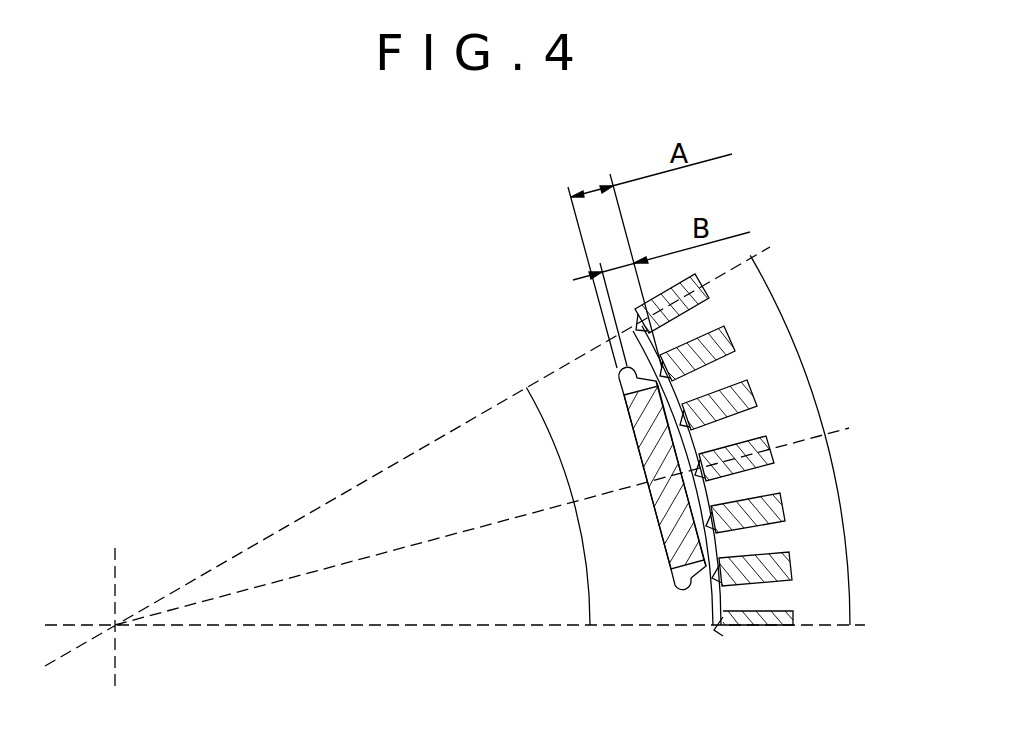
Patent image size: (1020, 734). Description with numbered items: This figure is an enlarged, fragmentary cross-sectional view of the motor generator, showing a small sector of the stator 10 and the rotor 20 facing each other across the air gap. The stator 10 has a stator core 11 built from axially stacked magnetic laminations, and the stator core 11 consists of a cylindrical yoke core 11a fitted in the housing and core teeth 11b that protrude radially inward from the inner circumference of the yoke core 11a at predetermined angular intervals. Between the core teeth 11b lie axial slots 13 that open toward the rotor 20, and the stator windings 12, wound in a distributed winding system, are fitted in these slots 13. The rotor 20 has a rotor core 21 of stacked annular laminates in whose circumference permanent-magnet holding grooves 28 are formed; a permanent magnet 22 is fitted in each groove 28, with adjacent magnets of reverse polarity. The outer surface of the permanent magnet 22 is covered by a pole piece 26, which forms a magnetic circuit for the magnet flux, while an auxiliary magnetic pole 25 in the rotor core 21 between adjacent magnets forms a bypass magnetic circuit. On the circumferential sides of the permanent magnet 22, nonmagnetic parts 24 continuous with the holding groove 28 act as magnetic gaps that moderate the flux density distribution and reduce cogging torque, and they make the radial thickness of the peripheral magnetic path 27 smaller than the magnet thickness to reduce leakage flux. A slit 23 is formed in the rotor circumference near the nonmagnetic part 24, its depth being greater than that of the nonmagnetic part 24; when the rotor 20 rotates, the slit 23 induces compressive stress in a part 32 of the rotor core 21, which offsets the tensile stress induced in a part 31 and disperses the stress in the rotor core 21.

The stator 10 is at (803, 546).
The stator core 11 is at (770, 277).
The yoke core 11a is at (767, 320).
The core teeth 11b is at (713, 375).
The stator windings 12 is at (737, 395).
The slots 13 is at (697, 437).
The rotor 20 is at (597, 604).
The rotor core 21 is at (590, 570).
The permanent magnet 22 is at (660, 486).
The slit 23 is at (676, 587).
The nonmagnetic part 24 is at (693, 565).
The auxiliary magnetic pole 25 is at (703, 608).
The pole piece 26 is at (690, 473).
The magnetic path 27 is at (725, 583).
The permanent-magnet holding groove 28 is at (663, 540).
The part of rotor core in which tensile stress is induced 31 is at (625, 371).
The part of rotor core in which compressive stress is induced 32 is at (625, 390).